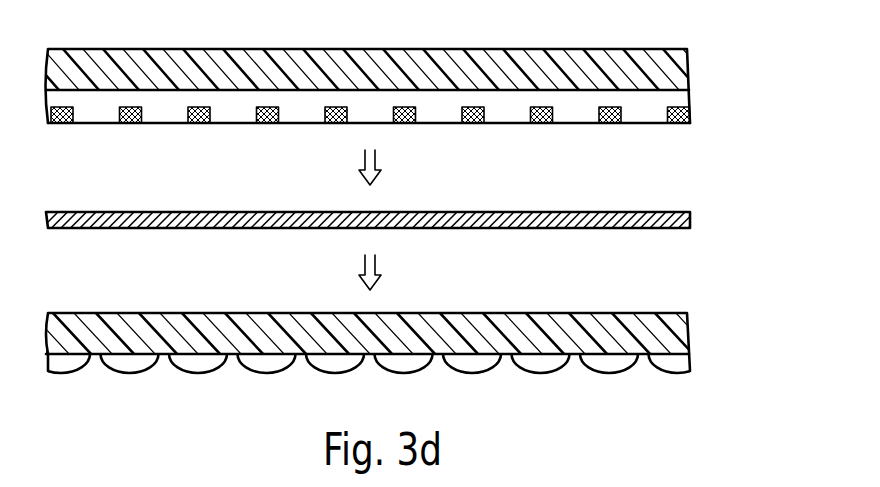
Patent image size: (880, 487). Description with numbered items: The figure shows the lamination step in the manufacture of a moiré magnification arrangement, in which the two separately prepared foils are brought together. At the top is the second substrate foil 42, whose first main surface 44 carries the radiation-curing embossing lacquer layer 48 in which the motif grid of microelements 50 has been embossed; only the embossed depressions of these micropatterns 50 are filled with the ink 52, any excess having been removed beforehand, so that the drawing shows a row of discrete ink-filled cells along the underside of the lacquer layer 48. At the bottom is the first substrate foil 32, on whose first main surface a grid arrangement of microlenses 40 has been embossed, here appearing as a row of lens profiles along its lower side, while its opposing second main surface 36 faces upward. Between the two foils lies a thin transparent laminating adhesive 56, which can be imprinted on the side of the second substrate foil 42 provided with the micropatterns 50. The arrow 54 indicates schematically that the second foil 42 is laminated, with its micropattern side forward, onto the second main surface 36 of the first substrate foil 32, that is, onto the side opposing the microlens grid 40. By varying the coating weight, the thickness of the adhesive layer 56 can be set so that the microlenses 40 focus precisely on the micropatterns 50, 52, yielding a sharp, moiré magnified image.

The first substrate foil 32 is at (668, 333).
The second main surface of the first substrate foil 36 is at (381, 309).
The microlenses 40 is at (678, 363).
The second substrate foil 42 is at (667, 68).
The first main surface of the second substrate foil 44 is at (410, 124).
The embossing lacquer layer 48 is at (668, 100).
The microelements 50 is at (424, 123).
The ink 52 is at (687, 122).
The arrow 54 is at (364, 162).
The laminating adhesive 56 is at (677, 220).